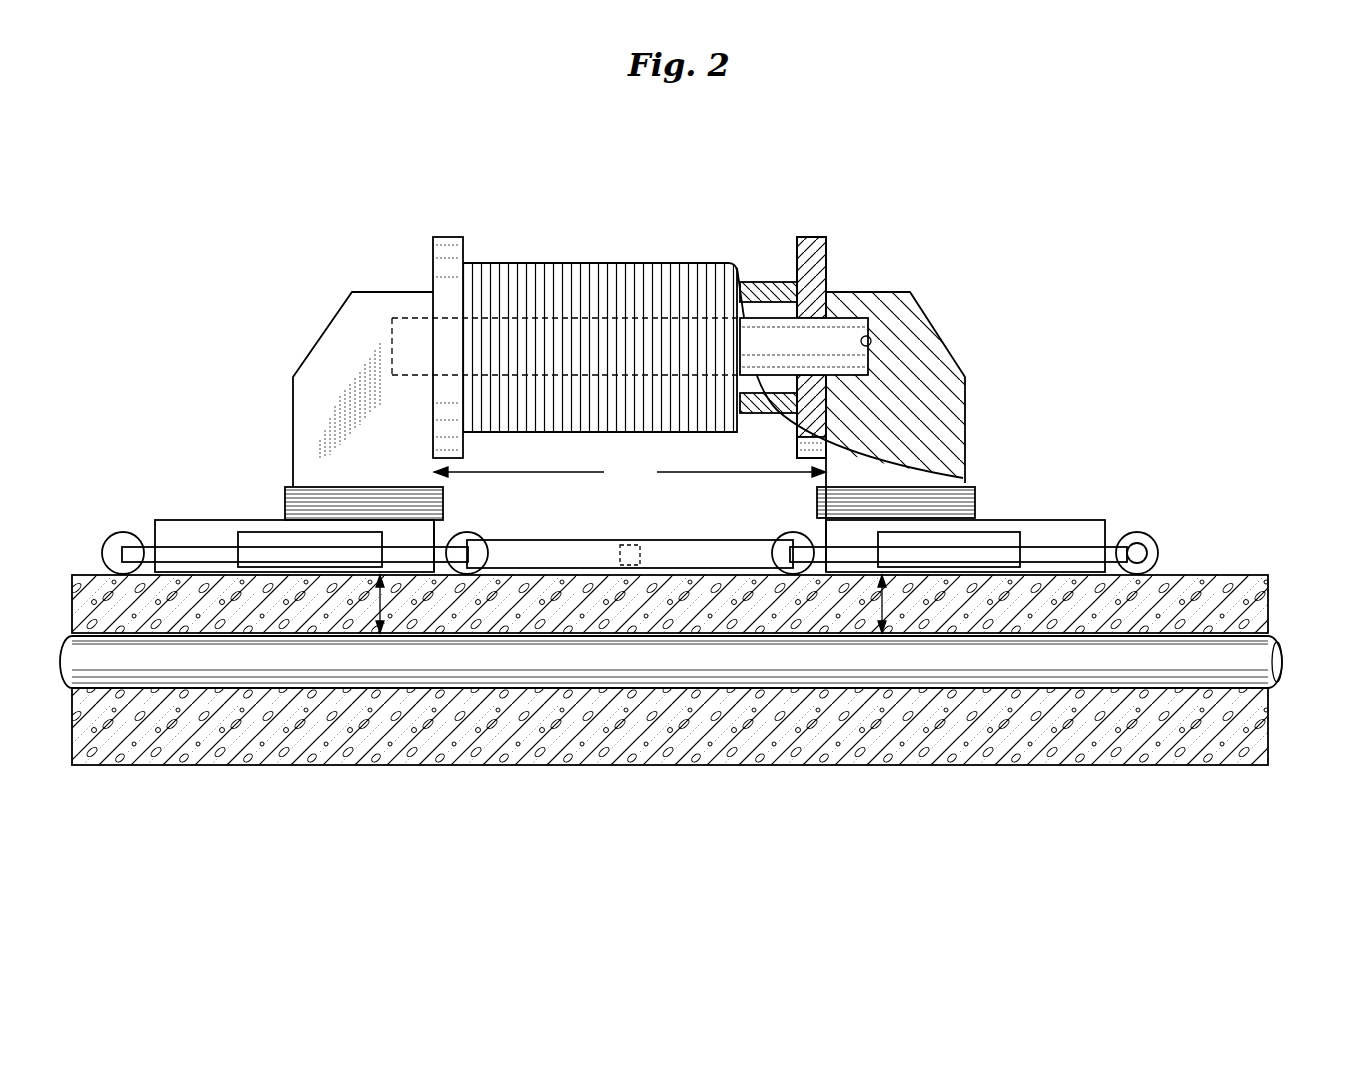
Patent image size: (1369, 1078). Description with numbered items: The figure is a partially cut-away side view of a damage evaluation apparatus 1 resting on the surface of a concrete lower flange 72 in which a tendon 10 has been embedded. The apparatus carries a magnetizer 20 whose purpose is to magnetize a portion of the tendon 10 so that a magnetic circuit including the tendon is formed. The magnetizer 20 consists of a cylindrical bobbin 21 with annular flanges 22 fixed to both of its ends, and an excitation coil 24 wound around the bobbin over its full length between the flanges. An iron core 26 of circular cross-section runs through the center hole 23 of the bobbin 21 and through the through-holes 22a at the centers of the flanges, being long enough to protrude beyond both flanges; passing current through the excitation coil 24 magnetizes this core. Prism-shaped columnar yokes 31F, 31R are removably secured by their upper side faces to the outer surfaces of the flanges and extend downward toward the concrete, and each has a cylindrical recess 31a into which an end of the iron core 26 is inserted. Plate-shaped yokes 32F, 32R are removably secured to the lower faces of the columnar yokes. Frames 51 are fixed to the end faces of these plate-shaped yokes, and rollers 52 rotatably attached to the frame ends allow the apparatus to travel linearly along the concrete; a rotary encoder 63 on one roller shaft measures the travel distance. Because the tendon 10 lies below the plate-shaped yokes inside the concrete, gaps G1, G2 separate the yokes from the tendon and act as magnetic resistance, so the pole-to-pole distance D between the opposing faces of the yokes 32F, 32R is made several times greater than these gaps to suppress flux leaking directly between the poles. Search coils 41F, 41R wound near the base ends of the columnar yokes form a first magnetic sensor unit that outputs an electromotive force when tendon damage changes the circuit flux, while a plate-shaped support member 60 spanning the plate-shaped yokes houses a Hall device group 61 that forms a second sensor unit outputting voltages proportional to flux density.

The damage evaluation apparatus 1 is at (980, 250).
The tendon 10 is at (1265, 642).
The magnetizer 20 is at (432, 263).
The bobbin 21 is at (745, 290).
The annular flange 22 is at (449, 237).
The through-hole 22a is at (825, 330).
The center hole 23 is at (765, 292).
The excitation coil 24 is at (570, 280).
The iron core 26 is at (850, 330).
The columnar yoke 31R is at (325, 360).
The columnar yoke 31F is at (965, 400).
The cylindrical recess 31a is at (870, 340).
The plate-shaped yoke 32R is at (182, 520).
The plate-shaped yoke 32F is at (1055, 530).
The search coil 41R is at (283, 490).
The search coil 41F is at (975, 495).
The frame 51 is at (245, 535).
The roller 52 is at (115, 545).
The support member 60 is at (700, 553).
The Hall device group 61 is at (630, 545).
The rotary encoder 63 is at (1137, 543).
The concrete lower flange 72 is at (1200, 577).
The distance between the poles D is at (630, 476).
The gap G1 is at (882, 605).
The gap G2 is at (380, 605).